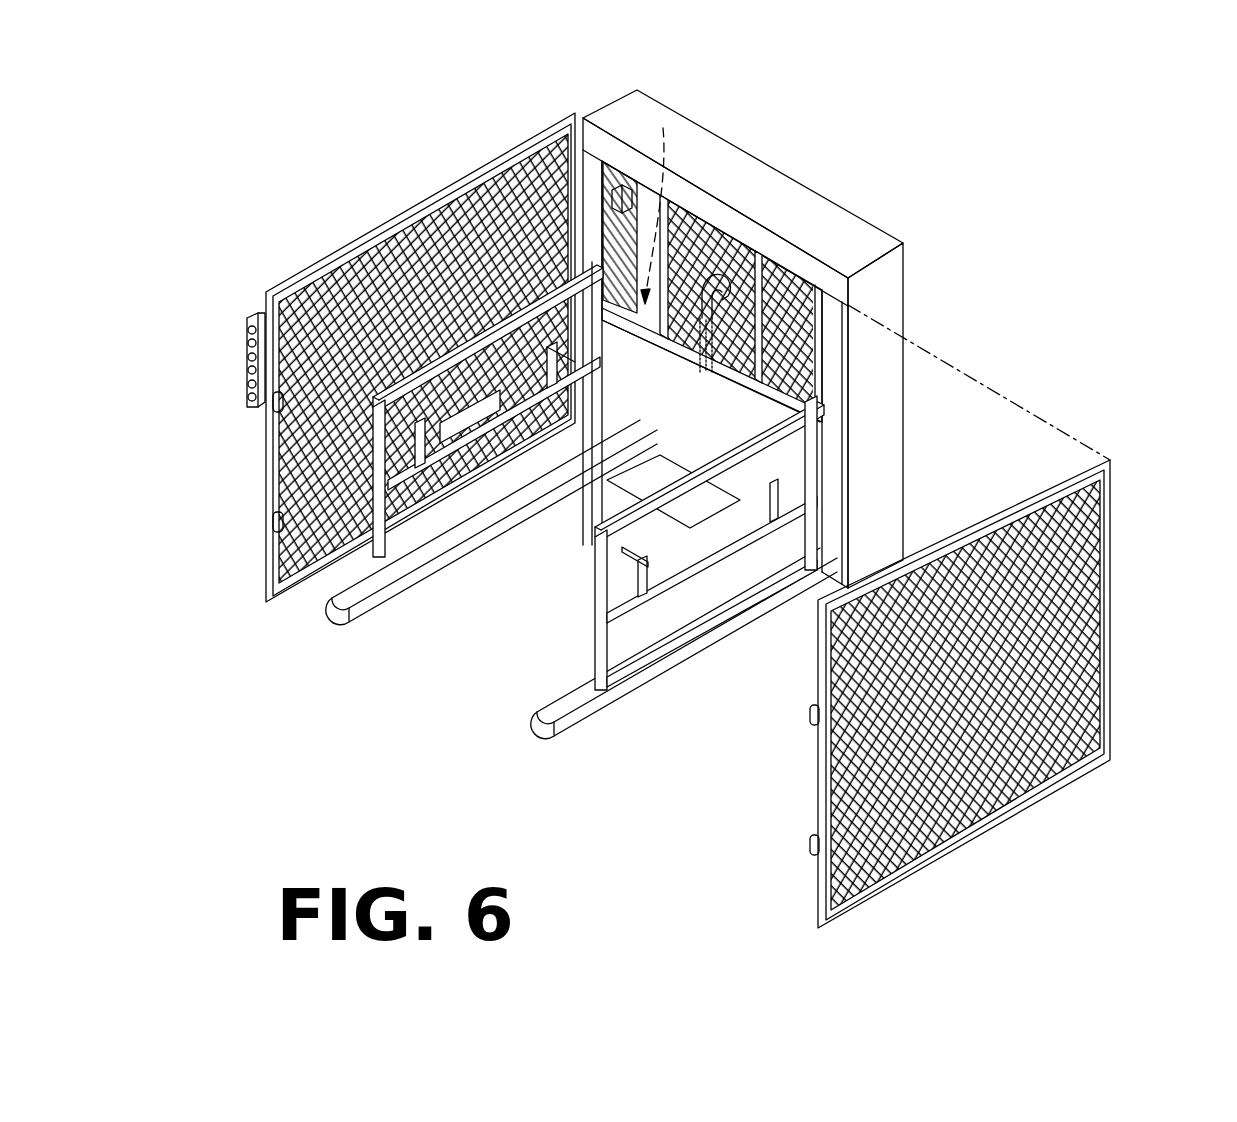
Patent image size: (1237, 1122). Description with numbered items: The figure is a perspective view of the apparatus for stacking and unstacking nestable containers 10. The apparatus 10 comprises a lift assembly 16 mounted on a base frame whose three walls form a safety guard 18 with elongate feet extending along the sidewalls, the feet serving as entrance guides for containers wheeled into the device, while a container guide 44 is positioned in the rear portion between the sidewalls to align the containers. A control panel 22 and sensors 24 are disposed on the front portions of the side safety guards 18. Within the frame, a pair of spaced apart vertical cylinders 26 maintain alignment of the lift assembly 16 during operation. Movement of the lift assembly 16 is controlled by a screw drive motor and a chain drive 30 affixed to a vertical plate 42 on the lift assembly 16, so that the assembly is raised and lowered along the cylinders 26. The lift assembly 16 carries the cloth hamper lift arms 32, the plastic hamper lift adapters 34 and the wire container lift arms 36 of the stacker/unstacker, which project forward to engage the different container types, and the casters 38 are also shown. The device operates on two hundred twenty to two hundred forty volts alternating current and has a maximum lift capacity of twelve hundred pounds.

The apparatus for stacking and unstacking nestable containers 10 is at (1150, 178).
The lift assembly 16 is at (400, 355).
The safety guard 18 is at (1002, 518).
The control panel 22 is at (257, 312).
The sensors 24 is at (278, 402).
The vertical cylinder 26 is at (663, 240).
The chain drive 30 is at (740, 215).
The cloth hamper lift arms 32 is at (440, 437).
The plastic hamper lift adapter 34 is at (508, 420).
The wire container lift arm 36 is at (436, 556).
The casters 38 is at (666, 126).
The vertical plate 42 is at (782, 460).
The container guide 44 is at (598, 520).